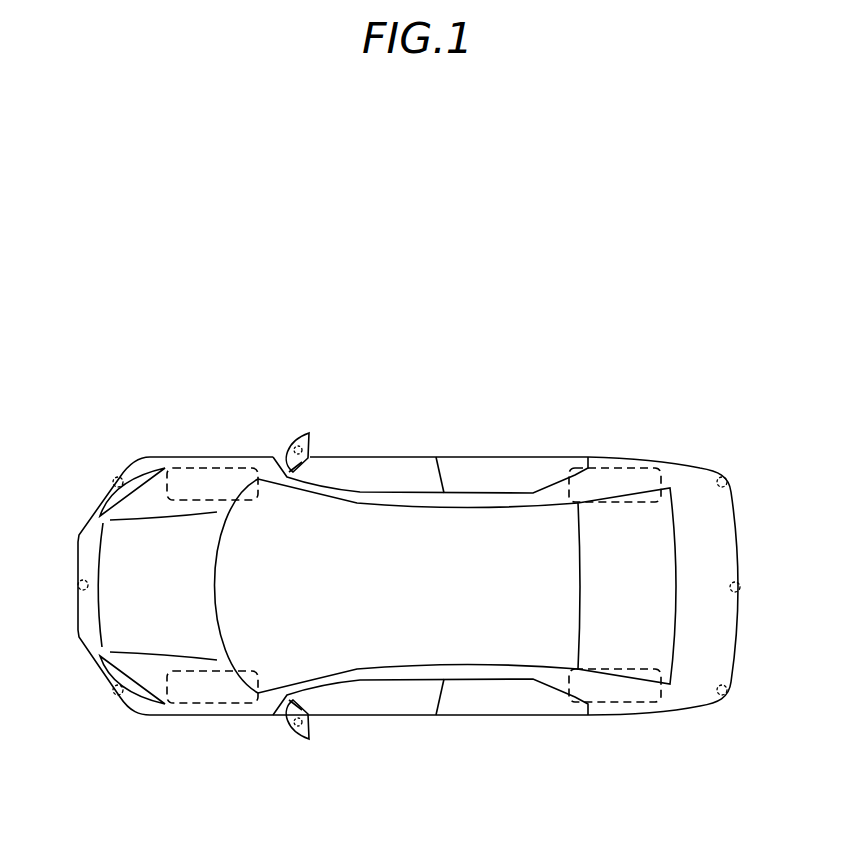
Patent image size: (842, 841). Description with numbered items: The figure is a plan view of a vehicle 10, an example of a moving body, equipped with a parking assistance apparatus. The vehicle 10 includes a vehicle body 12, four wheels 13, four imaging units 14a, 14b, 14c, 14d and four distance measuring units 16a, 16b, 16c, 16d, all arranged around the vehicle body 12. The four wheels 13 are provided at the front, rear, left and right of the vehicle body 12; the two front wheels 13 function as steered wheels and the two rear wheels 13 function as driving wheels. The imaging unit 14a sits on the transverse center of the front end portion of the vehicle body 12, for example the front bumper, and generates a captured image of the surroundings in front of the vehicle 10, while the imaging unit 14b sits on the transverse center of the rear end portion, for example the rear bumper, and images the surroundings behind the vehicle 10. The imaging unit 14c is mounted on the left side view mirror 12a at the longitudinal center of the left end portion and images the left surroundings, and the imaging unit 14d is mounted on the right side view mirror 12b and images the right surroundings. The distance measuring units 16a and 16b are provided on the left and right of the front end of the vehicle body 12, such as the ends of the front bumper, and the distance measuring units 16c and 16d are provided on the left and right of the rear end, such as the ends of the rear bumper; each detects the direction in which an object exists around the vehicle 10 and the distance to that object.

The vehicle 10 is at (452, 412).
The vehicle body 12 is at (545, 451).
The left side view mirror 12a is at (310, 733).
The right side view mirror 12b is at (311, 438).
The wheel 13 is at (201, 467).
The imaging unit 14a is at (78, 587).
The imaging unit 14b is at (740, 589).
The imaging unit 14c is at (297, 729).
The imaging unit 14d is at (301, 443).
The distance measuring unit 16a is at (113, 693).
The distance measuring unit 16b is at (113, 479).
The distance measuring unit 16c is at (727, 692).
The distance measuring unit 16d is at (727, 480).